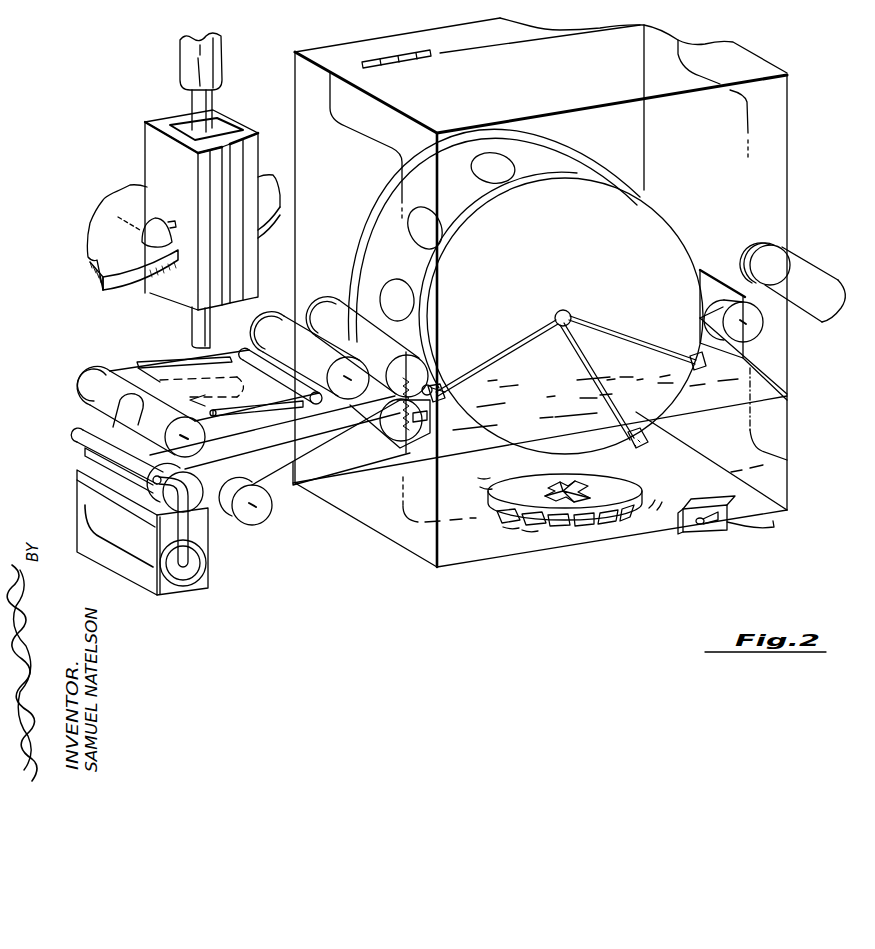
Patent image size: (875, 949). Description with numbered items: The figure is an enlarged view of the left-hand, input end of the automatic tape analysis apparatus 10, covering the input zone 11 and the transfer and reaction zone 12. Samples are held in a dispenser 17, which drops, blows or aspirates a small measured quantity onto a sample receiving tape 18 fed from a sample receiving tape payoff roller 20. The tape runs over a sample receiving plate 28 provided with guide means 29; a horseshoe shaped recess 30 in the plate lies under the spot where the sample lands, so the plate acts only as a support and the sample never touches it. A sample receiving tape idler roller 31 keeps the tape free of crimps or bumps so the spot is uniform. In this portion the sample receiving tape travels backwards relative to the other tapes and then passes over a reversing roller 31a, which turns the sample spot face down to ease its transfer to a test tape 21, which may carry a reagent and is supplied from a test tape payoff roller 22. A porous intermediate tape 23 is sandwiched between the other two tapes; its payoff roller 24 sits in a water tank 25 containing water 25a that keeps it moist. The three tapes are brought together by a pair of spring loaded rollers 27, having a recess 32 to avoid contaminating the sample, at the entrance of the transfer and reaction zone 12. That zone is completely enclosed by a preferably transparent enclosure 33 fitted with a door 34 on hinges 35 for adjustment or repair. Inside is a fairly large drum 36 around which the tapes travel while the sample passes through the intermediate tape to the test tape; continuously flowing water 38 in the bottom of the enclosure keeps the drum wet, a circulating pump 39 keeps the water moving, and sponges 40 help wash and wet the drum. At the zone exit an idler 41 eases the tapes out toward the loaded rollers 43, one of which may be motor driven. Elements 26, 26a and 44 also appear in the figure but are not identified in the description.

The apparatus 10 is at (755, 64).
The input zone 11 is at (181, 355).
The transfer and reaction zone 12 is at (360, 500).
The dispenser 17 is at (100, 240).
The sample receiving tape 18 is at (130, 368).
The sample receiving tape payoff roller 20 is at (286, 309).
The test tape 21 is at (272, 474).
The test tape payoff roller 22 is at (262, 519).
The intermediate tape 23 is at (243, 451).
The intermediate tape payoff roller 24 is at (185, 584).
The water tank 25 is at (148, 588).
The water 25a is at (204, 534).
The idler roller 26 is at (199, 486).
The rod 26a is at (77, 438).
The spring loaded rollers 27 is at (322, 318).
The sample receiving plate 28 is at (218, 358).
The guide means 29 is at (153, 362).
The horseshoe shaped recess 30 is at (243, 386).
The sample receiving tape idler roller 31 is at (243, 343).
The reversing roller 31a is at (90, 373).
The recess 32 is at (368, 347).
The enclosure 33 is at (404, 548).
The door 34 is at (411, 121).
The hinges 35 is at (388, 61).
The drum 36 is at (592, 190).
The continuously flowing water 38 is at (762, 386).
The circulating pump 39 is at (632, 495).
The sponge 40 is at (648, 433).
The idler 41 is at (712, 292).
The loaded rollers 43 is at (810, 276).
The motor 44 is at (700, 531).